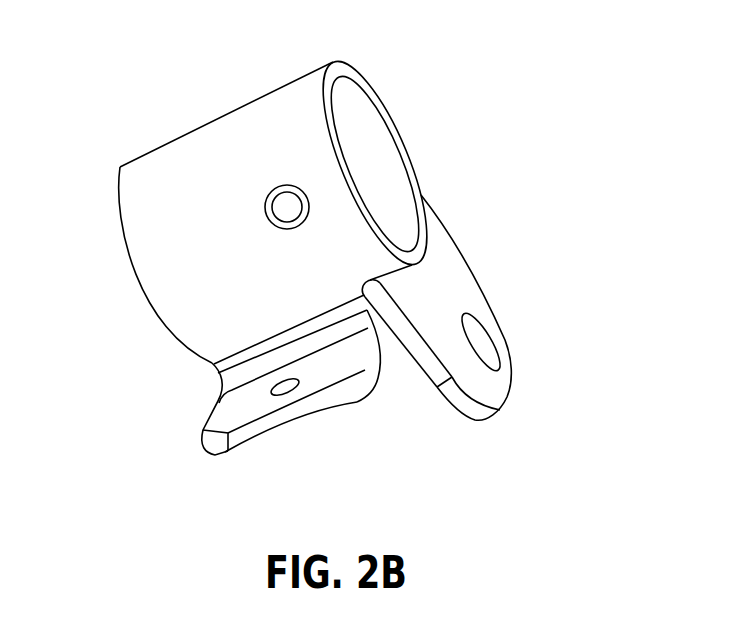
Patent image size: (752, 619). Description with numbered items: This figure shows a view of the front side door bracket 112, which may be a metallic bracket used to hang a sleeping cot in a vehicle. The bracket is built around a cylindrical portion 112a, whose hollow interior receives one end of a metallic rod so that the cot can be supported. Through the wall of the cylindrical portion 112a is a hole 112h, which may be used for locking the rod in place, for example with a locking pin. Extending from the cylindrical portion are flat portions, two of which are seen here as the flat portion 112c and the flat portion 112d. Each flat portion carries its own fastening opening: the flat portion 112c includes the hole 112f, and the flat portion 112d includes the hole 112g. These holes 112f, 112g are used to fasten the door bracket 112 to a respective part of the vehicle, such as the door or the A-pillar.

The front side door bracket 112 is at (585, 129).
The cylindrical portion 112a is at (282, 105).
The flat portion 112c is at (441, 267).
The flat portion 112d is at (323, 375).
The hole 112f is at (477, 348).
The hole 112g is at (284, 386).
The hole 112h is at (286, 204).